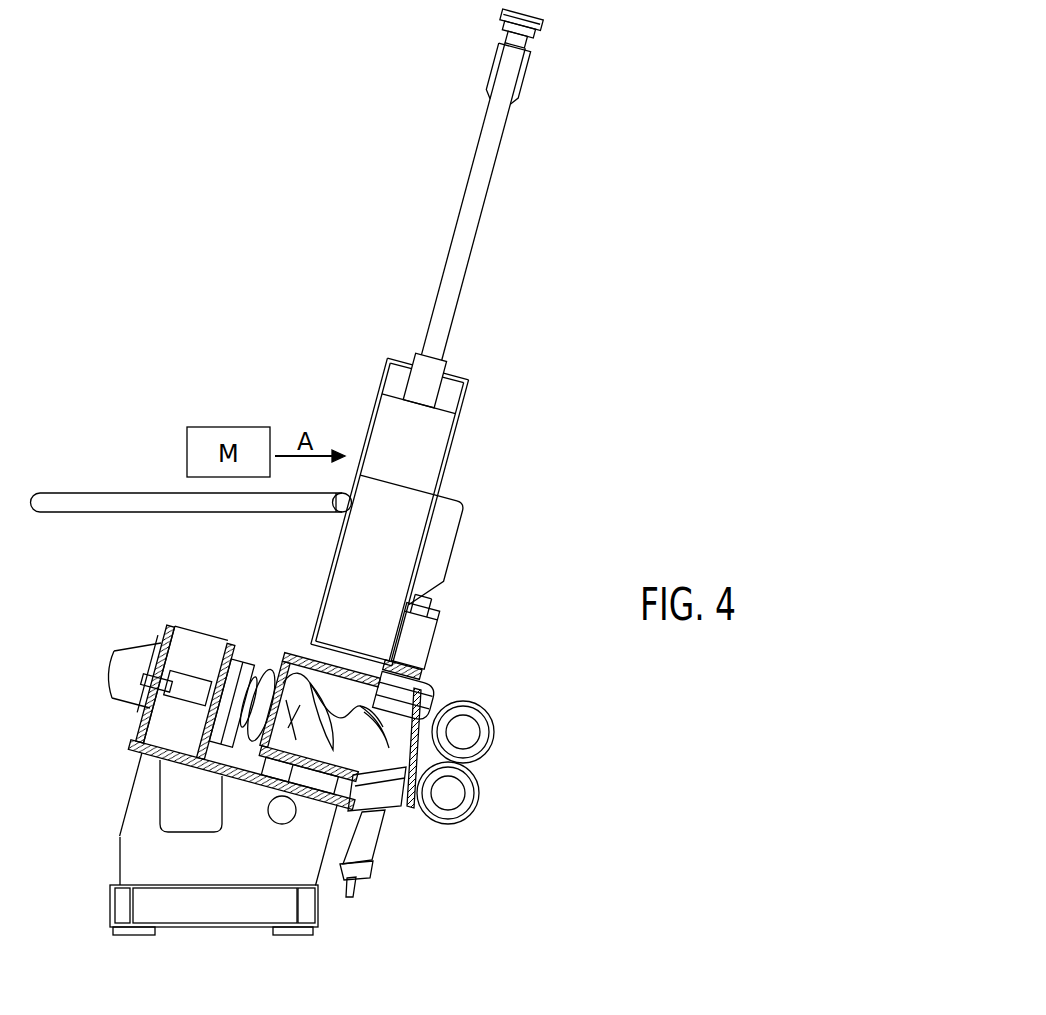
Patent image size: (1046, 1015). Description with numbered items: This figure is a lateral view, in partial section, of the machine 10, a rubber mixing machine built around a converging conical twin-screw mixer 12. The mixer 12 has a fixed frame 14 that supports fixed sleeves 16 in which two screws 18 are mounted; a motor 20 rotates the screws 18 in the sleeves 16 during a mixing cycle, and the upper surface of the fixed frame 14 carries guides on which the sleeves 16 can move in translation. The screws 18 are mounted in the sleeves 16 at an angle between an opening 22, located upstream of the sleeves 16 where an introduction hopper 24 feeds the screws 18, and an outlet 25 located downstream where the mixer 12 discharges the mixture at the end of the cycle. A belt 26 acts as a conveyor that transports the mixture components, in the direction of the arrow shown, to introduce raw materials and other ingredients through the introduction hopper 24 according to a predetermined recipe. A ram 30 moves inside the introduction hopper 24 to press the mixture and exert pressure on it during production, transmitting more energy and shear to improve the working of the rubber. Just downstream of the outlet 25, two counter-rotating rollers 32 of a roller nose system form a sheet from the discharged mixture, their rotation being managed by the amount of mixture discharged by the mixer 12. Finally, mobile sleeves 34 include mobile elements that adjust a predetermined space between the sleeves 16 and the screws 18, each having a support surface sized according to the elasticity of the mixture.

The machine 10 is at (575, 162).
The converging conical twin-screw mixer 12 is at (157, 730).
The fixed frame 14 is at (133, 855).
The fixed sleeves 16 is at (420, 667).
The screws 18 is at (295, 710).
The motor 20 is at (127, 665).
The opening 22 is at (330, 695).
The introduction hopper 24 is at (400, 568).
The outlet 25 is at (440, 820).
The belt 26 is at (75, 495).
The ram 30 is at (432, 440).
The counter-rotating rollers 32 is at (477, 797).
The mobile sleeves 34 is at (427, 688).